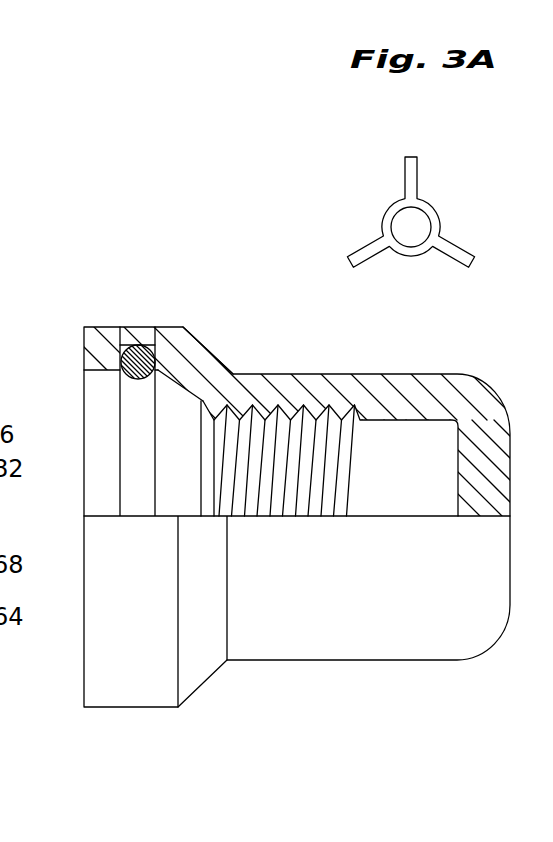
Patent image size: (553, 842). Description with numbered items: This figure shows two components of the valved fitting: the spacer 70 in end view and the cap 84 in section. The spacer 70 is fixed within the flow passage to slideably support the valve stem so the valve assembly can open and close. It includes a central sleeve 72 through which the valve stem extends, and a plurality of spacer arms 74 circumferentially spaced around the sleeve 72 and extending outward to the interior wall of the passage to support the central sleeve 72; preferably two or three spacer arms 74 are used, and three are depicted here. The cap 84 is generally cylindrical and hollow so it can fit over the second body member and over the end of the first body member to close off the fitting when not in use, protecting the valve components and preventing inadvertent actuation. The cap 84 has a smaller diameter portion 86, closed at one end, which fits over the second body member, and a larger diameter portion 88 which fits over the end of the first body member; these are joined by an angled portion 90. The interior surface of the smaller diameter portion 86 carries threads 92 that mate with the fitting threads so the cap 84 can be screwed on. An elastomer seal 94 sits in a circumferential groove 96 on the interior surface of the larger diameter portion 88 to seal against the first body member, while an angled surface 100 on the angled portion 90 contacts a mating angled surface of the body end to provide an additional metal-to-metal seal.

The spacer 70 is at (415, 194).
The central sleeve 72 is at (438, 213).
The spacer arms 74 is at (403, 165).
The cap 84 is at (278, 509).
The smaller diameter portion 86 is at (342, 375).
The larger diameter portion 88 is at (85, 327).
The angled portion 90 is at (193, 377).
The threads 92 is at (339, 414).
The elastomer seal 94 is at (125, 345).
The circumferential groove 96 is at (152, 346).
The angled surface 100 is at (187, 385).